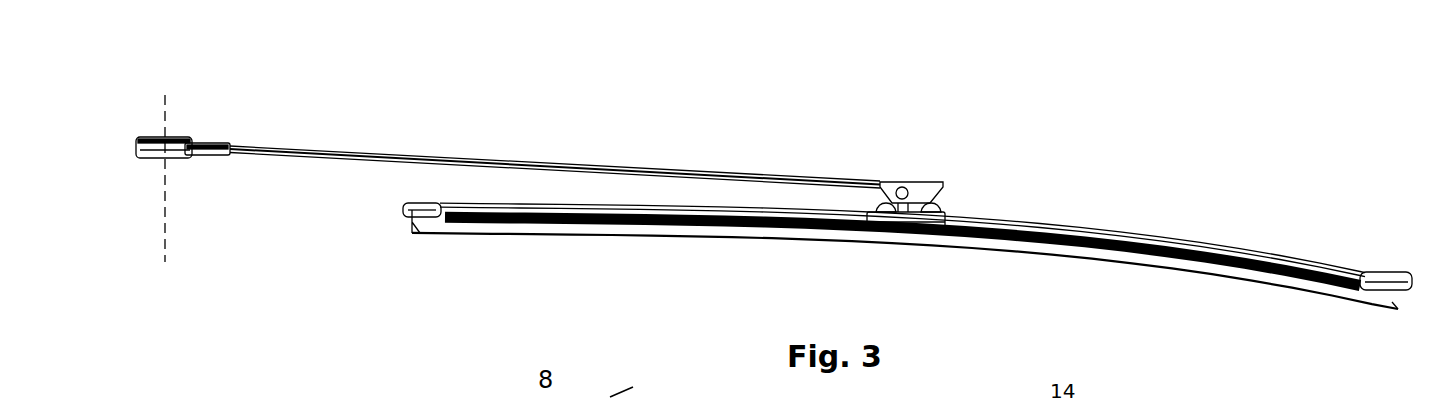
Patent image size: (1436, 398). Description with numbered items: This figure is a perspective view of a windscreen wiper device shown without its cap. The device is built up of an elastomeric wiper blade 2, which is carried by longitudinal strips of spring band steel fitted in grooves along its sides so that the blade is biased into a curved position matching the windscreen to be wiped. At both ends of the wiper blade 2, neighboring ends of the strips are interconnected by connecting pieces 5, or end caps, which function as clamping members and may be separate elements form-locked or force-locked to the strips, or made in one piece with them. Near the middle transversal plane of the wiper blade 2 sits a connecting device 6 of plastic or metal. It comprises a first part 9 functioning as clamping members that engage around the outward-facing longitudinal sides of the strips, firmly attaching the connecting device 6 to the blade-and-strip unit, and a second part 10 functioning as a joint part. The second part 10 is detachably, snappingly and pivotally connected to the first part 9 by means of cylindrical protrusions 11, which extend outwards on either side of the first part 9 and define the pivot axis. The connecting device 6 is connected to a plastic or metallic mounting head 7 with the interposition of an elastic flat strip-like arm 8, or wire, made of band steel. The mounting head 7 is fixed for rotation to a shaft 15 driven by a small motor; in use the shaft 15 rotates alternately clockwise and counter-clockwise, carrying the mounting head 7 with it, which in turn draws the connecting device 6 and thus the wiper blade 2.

The wiper blade 2 is at (737, 236).
The connecting pieces 5 is at (418, 200).
The connecting device 6 is at (963, 186).
The mounting head 7 is at (190, 136).
The arm 8 is at (393, 157).
The first part 9 is at (928, 233).
The second part 10 is at (923, 181).
The cylindrical protrusions 11 is at (886, 246).
The shaft 15 is at (168, 257).